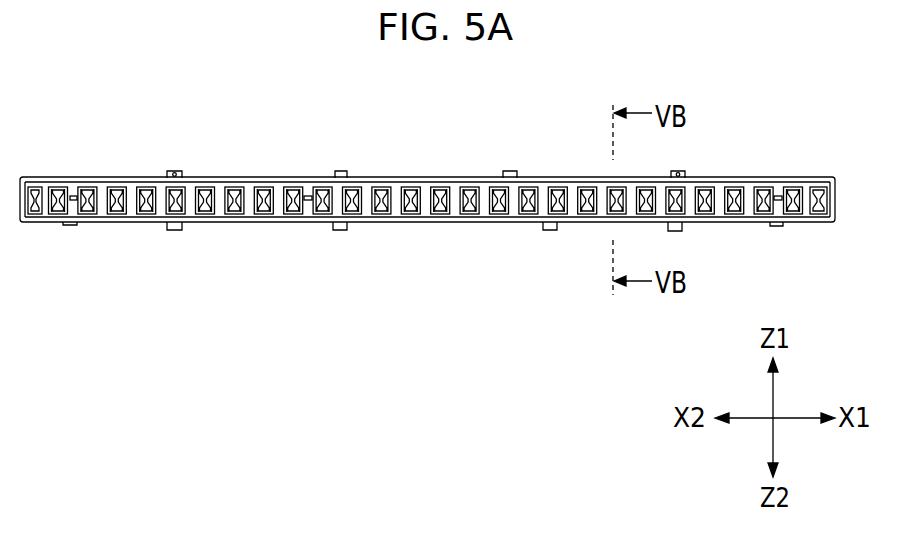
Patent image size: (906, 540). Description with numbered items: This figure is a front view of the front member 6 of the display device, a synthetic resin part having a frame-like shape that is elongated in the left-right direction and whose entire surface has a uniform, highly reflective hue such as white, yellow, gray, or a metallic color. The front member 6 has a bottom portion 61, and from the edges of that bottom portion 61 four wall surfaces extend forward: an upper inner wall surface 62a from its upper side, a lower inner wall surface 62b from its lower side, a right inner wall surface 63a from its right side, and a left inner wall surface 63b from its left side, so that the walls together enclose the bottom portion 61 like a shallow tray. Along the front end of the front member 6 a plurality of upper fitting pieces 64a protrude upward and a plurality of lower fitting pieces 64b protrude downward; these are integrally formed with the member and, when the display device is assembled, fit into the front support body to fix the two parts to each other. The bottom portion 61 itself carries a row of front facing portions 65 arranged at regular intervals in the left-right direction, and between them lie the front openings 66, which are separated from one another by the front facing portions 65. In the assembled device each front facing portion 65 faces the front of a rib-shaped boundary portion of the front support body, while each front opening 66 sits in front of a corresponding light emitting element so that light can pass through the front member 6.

The front member 6 is at (440, 170).
The bottom portion 61 is at (300, 222).
The upper inner wall surface 62a is at (250, 183).
The lower inner wall surface 62b is at (233, 222).
The right inner wall surface 63a is at (822, 212).
The left inner wall surface 63b is at (31, 212).
The upper fitting pieces 64a is at (174, 170).
The lower fitting pieces 64b is at (173, 231).
The front facing portions 65 is at (451, 208).
The front openings 66 is at (380, 205).